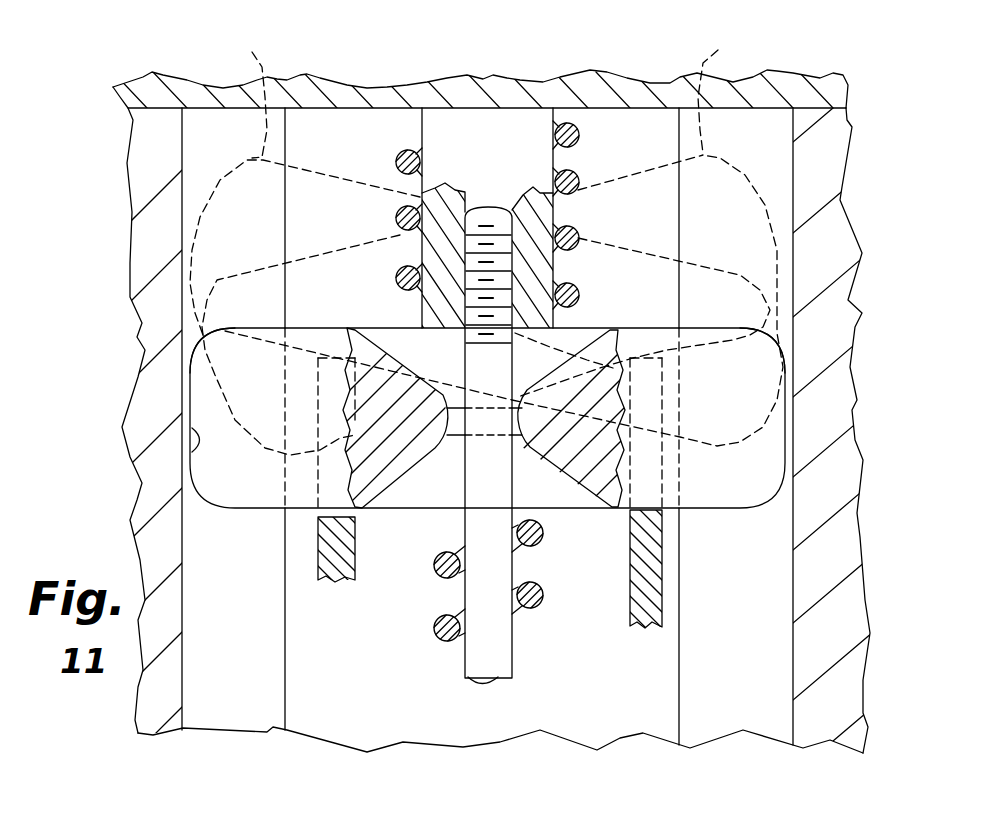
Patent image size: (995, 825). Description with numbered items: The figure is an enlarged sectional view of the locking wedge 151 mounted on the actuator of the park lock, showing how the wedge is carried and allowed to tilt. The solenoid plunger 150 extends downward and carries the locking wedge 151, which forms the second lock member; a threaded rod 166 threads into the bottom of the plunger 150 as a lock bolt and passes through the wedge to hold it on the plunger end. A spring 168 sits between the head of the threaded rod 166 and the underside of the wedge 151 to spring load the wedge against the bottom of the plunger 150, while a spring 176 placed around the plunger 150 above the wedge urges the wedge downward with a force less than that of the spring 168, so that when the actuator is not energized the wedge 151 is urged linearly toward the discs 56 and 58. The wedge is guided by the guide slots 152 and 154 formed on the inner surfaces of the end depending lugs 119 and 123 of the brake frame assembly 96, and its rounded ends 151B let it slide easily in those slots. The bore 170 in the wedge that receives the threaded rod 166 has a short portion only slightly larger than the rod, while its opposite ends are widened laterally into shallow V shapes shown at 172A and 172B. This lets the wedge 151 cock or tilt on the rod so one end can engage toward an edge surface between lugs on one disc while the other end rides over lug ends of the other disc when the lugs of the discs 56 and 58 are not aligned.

The brake frame assembly 96 is at (120, 206).
The end depending lug 123 is at (142, 400).
The end depending lug 119 is at (802, 523).
The guide slot 154 is at (257, 658).
The guide slot 152 is at (697, 698).
The plunger 150 is at (458, 152).
The threaded rod 166 is at (493, 652).
The locking wedge 151 is at (772, 627).
The rounded ends 151B is at (208, 445).
The widened bore end 172A is at (577, 327).
The widened bore end 172B is at (413, 488).
The bore 170 is at (557, 508).
The disc 58 is at (333, 548).
The disc 56 is at (650, 602).
The spring 176 is at (577, 131).
The spring 168 is at (440, 642).